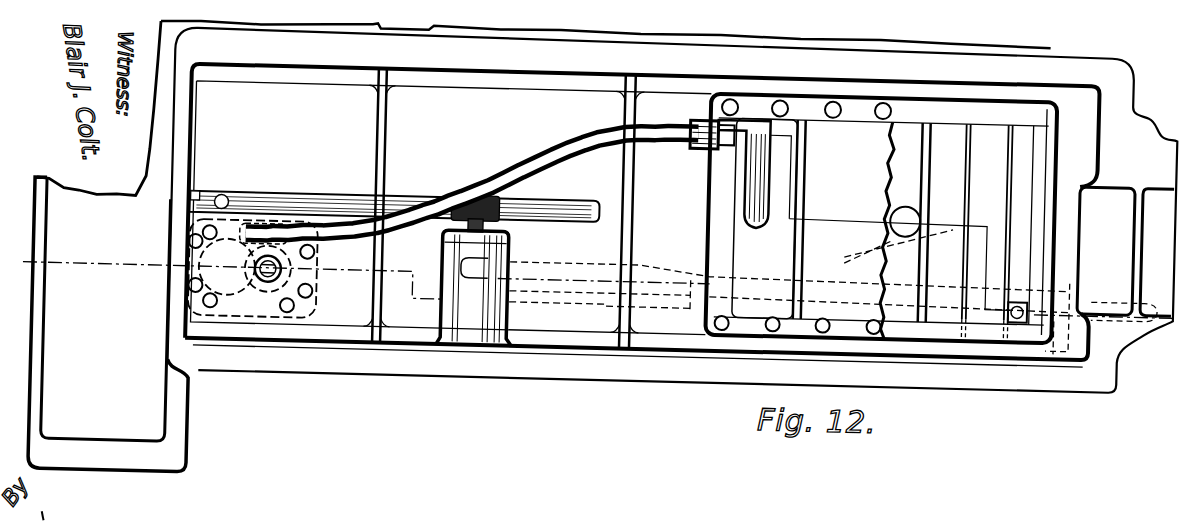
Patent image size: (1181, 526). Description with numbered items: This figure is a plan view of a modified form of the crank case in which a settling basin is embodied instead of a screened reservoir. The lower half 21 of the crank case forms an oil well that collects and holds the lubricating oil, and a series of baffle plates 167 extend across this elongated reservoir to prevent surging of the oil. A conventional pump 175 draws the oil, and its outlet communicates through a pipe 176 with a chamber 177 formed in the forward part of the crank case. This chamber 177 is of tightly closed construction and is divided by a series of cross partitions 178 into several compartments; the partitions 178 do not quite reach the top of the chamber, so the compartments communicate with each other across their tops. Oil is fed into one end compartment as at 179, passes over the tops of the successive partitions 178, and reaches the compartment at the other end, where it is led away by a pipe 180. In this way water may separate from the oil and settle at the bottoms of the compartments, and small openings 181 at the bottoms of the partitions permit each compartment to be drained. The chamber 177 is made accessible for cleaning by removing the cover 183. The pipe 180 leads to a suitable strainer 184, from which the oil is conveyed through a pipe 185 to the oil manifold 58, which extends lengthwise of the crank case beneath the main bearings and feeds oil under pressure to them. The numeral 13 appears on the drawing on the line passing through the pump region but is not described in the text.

The pipe line 13 is at (591, 290).
The lower half of the crank case 21 is at (476, 354).
The oil manifold 58 is at (298, 196).
The baffle plates 167 is at (382, 149).
The pump 175 is at (240, 286).
The pipe 176 is at (483, 176).
The chamber 177 is at (907, 125).
The cross partitions 178 is at (1013, 155).
The oil feed point 179 is at (750, 172).
The pipe 180 is at (1140, 368).
The small openings 181 is at (899, 257).
The cover 183 is at (762, 288).
The strainer 184 is at (487, 290).
The pipe 185 is at (486, 215).